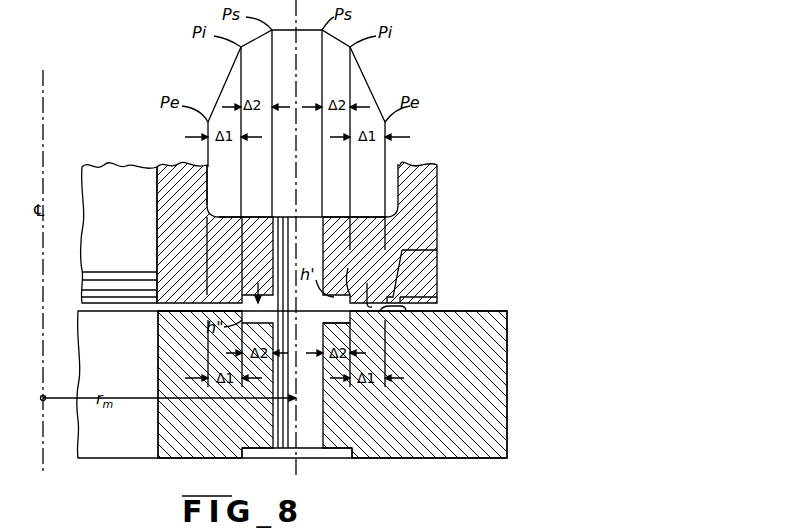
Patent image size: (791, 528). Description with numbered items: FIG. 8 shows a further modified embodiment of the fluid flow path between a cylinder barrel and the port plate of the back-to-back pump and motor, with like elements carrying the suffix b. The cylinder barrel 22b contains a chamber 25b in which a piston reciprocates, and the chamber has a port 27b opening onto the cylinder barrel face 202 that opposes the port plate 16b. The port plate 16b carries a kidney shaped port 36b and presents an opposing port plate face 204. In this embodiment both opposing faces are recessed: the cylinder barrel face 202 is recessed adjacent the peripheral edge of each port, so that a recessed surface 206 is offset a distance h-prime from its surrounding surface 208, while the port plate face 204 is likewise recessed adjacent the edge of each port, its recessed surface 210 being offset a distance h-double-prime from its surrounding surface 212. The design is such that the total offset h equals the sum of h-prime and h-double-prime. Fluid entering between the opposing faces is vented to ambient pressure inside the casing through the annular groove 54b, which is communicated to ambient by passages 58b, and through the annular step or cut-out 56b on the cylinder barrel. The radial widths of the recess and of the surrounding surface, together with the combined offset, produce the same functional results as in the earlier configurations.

The cylinder barrel 22b is at (437, 175).
The chamber 25b is at (394, 174).
The port 27b is at (310, 220).
The cylinder barrel face 202 is at (175, 297).
The port plate face 204 is at (190, 315).
The annular step or cut-out 56b is at (193, 298).
The annular groove 54b is at (402, 253).
The passage 58b is at (427, 273).
The recessed surface 206 is at (350, 268).
The surrounding surface 208 is at (367, 290).
The recessed surface 210 is at (350, 326).
The surrounding surface 212 is at (405, 313).
The kidney shaped port 36b is at (310, 437).
The port plate 16b is at (465, 450).